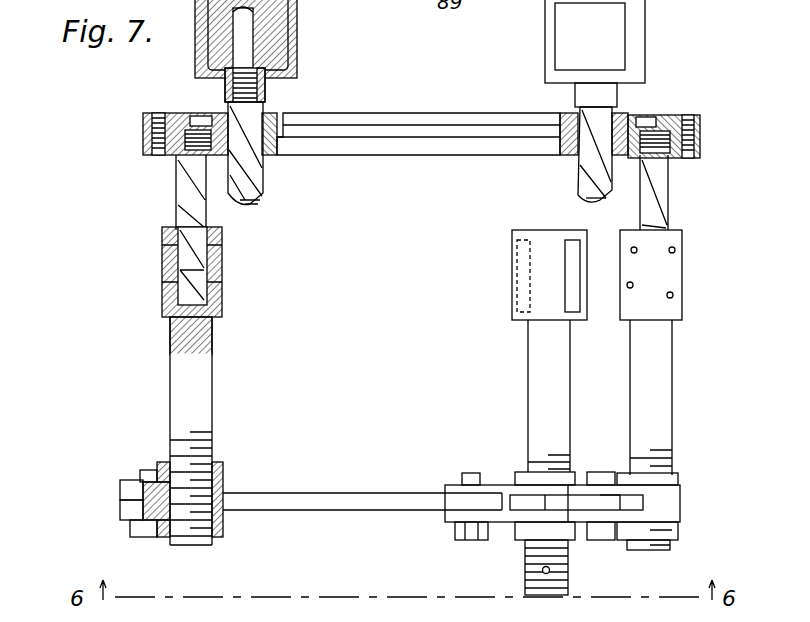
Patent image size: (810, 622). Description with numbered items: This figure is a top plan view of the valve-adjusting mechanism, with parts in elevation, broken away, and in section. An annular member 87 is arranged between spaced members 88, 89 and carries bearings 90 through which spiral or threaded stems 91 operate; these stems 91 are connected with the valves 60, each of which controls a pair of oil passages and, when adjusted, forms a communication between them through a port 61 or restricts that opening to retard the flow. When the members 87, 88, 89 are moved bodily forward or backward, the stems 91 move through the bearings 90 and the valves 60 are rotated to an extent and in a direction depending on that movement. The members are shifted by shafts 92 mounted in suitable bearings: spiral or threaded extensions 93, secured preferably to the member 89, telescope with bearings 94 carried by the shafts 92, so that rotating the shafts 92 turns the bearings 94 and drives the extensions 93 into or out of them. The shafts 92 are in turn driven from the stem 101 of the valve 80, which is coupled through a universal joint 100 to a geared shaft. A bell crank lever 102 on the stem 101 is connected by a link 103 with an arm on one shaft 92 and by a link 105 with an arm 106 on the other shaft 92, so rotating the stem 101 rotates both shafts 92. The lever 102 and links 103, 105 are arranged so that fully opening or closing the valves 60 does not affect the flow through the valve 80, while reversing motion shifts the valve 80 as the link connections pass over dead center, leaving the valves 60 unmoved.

The valve 60 is at (297, 25).
The port 61 is at (572, 48).
The valve 80 is at (545, 288).
The annular member 87 is at (352, 130).
The spaced member 88 is at (143, 123).
The spaced member 89 is at (147, 148).
The bearing 90 is at (265, 160).
The spiral or threaded stem 91 is at (258, 207).
The shaft 92 is at (205, 405).
The spiral or threaded extension 93 is at (168, 210).
The bearing 94 is at (162, 266).
The universal joint 100 is at (612, 492).
The stem 101 is at (530, 408).
The bell crank lever 102 is at (497, 520).
The link 103 is at (553, 503).
The link 105 is at (345, 482).
The arm 106 is at (133, 500).